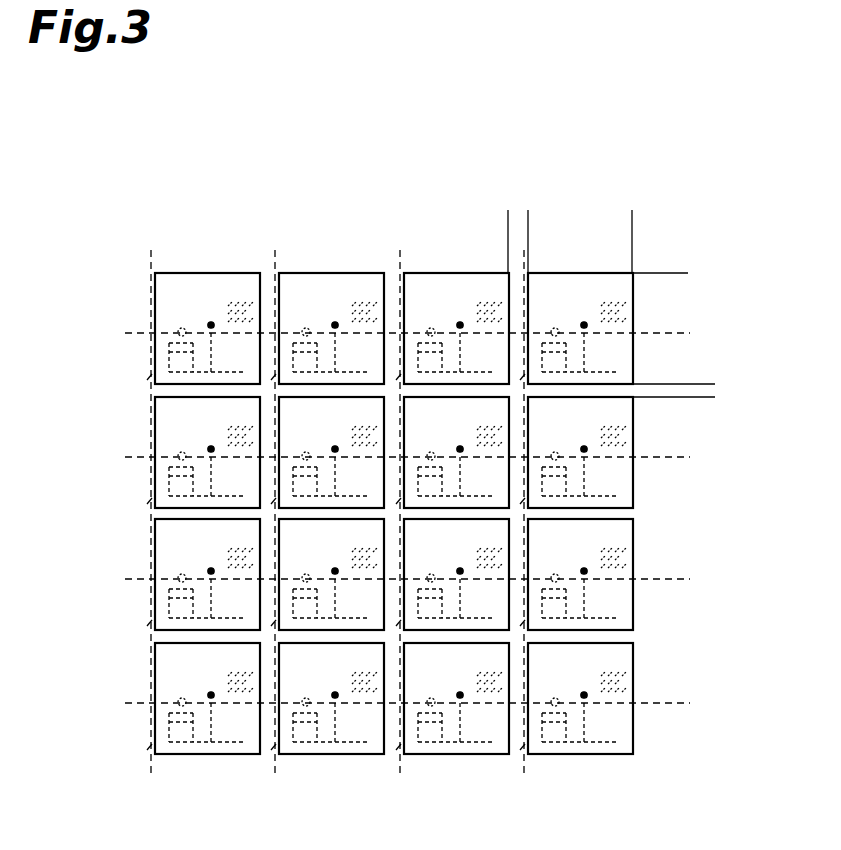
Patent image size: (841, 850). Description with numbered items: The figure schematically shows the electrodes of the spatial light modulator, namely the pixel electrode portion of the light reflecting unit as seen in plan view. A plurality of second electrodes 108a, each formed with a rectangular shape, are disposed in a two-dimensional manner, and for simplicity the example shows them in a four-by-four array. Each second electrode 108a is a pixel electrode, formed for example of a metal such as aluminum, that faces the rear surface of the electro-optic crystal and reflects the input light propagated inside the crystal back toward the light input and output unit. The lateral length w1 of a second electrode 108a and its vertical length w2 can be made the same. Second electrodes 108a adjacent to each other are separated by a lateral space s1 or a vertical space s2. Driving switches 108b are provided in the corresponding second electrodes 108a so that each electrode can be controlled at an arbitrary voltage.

The second electrodes 108a is at (181, 290).
The driving switches 108b is at (183, 730).
The space s1 is at (563, 223).
The length in lateral direction w1 is at (632, 250).
The length in vertical direction w2 is at (655, 273).
The space s2 is at (703, 353).